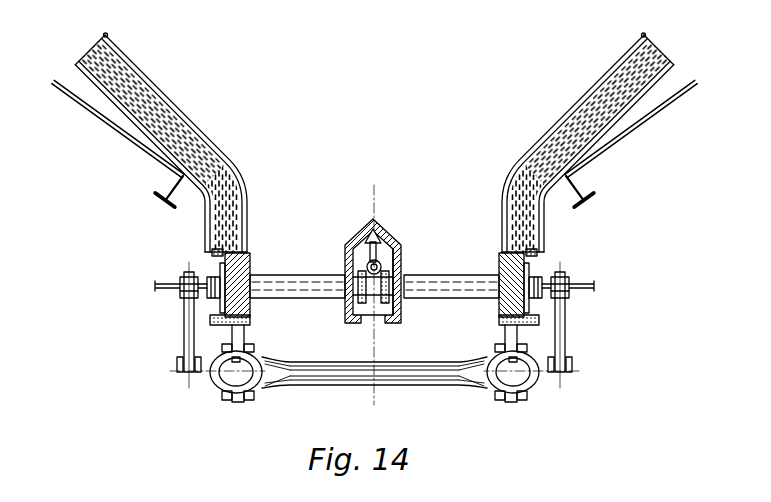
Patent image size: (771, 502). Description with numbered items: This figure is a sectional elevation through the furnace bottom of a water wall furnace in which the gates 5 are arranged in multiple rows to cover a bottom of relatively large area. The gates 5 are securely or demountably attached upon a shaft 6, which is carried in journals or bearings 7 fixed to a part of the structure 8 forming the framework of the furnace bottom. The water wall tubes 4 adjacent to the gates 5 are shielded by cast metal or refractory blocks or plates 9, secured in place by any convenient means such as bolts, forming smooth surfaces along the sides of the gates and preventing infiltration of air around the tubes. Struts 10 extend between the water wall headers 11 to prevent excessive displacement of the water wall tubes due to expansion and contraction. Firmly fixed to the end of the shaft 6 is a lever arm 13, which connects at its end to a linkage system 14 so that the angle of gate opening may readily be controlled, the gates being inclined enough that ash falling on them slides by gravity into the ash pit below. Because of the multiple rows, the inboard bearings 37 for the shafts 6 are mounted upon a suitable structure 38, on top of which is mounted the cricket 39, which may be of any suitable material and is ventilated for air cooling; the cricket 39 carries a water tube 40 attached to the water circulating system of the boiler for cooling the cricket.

The water wall tubes 4 is at (168, 97).
The gates 5 is at (290, 274).
The shaft 6 is at (168, 284).
The bearings 7 is at (208, 278).
The structure forming the framework of the furnace bottom 8 is at (140, 161).
The blocks or plates 9 is at (253, 262).
The struts 10 is at (418, 386).
The water wall headers 11 is at (238, 373).
The lever arm 13 is at (183, 337).
The linkage system 14 is at (568, 367).
The inboard bearings 37 is at (368, 306).
The structure 38 is at (400, 320).
The cricket 39 is at (360, 229).
The water tube 40 is at (401, 253).